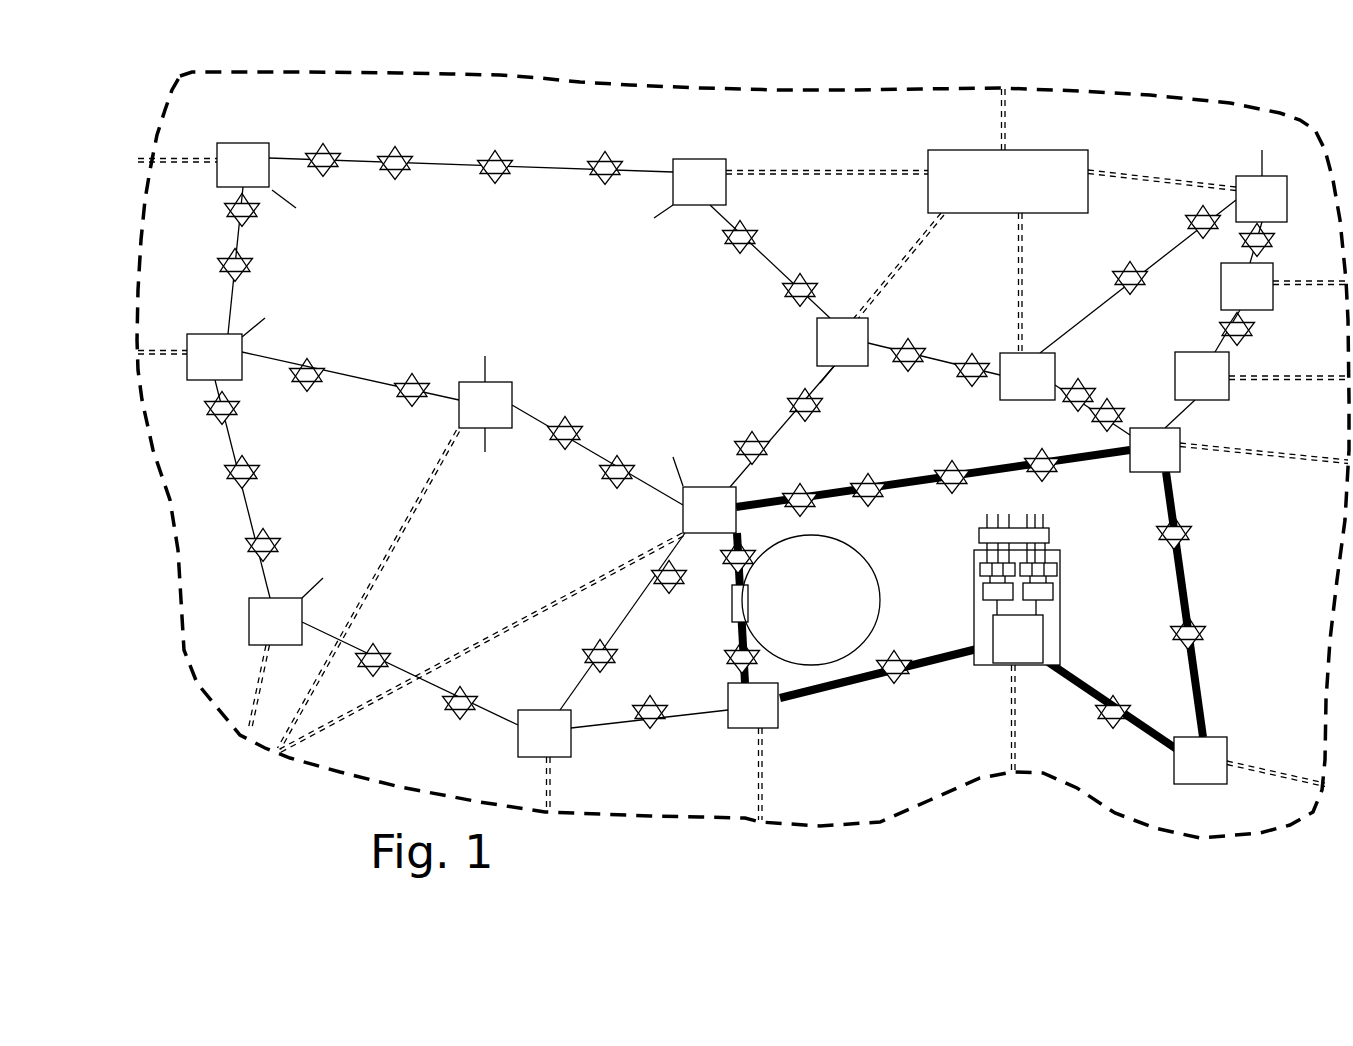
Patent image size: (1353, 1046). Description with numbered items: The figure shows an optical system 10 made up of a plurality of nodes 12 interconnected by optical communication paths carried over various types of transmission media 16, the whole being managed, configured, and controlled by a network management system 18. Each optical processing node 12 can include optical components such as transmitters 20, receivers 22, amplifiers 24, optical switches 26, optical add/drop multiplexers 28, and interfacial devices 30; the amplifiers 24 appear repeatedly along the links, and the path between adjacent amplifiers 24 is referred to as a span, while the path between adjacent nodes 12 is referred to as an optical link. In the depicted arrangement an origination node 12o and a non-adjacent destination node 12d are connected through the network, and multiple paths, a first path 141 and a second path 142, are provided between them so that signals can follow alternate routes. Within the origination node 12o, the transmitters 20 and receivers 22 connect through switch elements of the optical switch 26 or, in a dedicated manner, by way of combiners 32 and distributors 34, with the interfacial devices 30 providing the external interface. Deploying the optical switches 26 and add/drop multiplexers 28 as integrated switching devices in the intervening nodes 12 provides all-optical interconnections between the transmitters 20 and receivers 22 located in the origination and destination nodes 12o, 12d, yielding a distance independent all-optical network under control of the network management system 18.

The optical system 10 is at (292, 783).
The node 12 is at (722, 158).
The destination node 12d is at (1185, 460).
The origination node 12o is at (1060, 647).
The first optical communication path 141 is at (1116, 753).
The second optical communication path 142 is at (1065, 440).
The transmission media 16 is at (905, 475).
The network management system 18 is at (1091, 160).
The transmitter 20 is at (980, 569).
The receiver 22 is at (1058, 568).
The amplifier 24 is at (755, 228).
The optical switch 26 is at (1045, 638).
The optical add/drop multiplexer 28 is at (732, 605).
The interfacial device 30 is at (1050, 533).
The combiner 32 is at (982, 587).
The distributor 34 is at (1053, 590).